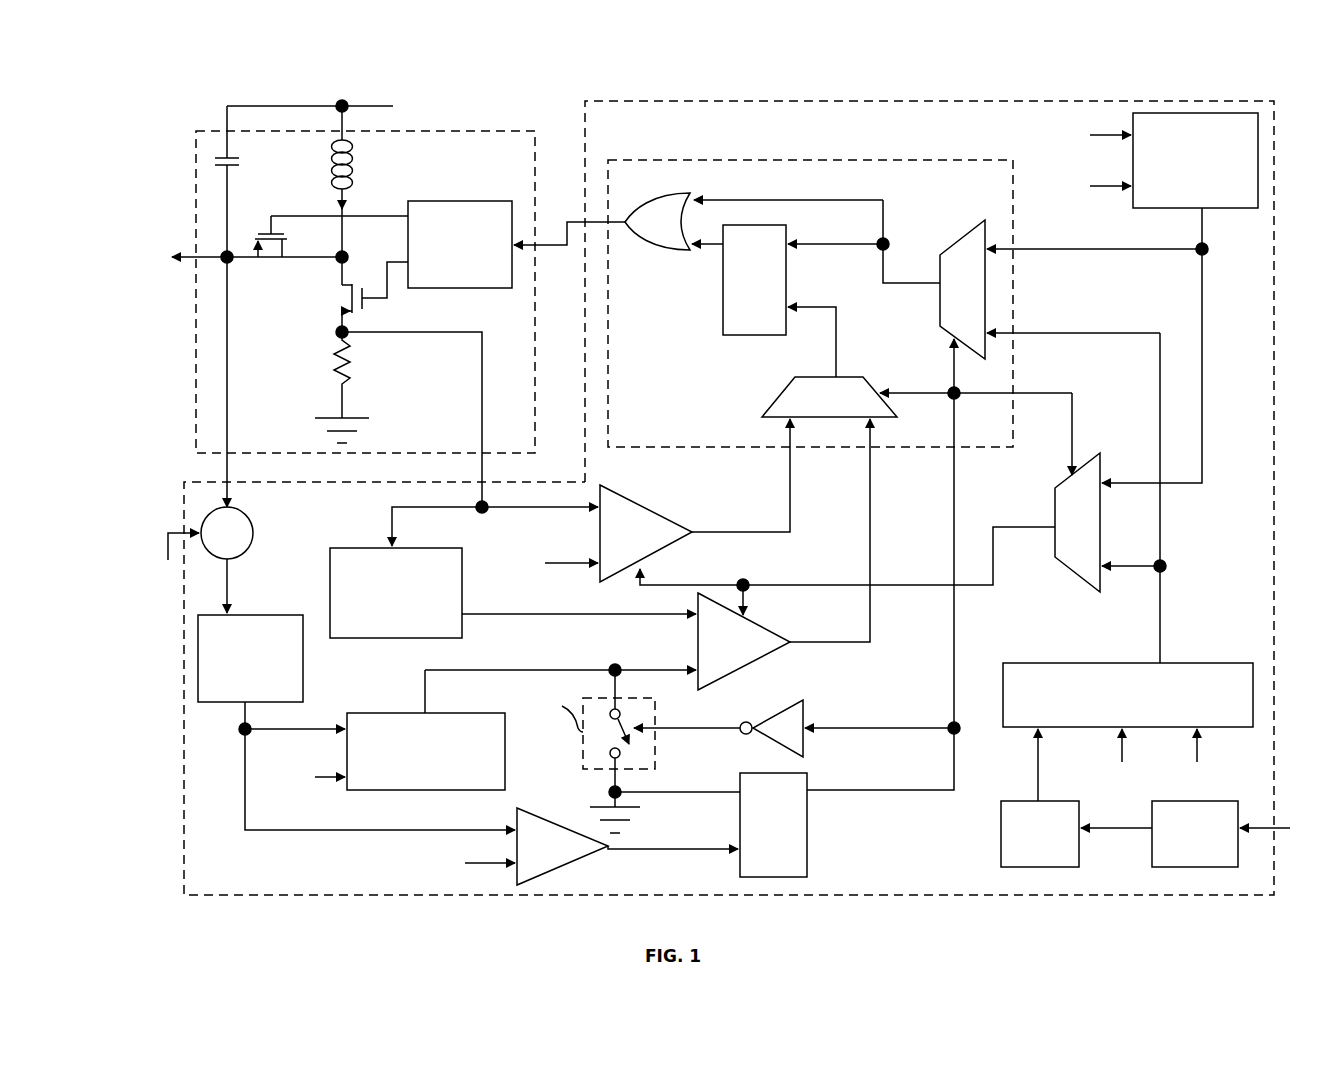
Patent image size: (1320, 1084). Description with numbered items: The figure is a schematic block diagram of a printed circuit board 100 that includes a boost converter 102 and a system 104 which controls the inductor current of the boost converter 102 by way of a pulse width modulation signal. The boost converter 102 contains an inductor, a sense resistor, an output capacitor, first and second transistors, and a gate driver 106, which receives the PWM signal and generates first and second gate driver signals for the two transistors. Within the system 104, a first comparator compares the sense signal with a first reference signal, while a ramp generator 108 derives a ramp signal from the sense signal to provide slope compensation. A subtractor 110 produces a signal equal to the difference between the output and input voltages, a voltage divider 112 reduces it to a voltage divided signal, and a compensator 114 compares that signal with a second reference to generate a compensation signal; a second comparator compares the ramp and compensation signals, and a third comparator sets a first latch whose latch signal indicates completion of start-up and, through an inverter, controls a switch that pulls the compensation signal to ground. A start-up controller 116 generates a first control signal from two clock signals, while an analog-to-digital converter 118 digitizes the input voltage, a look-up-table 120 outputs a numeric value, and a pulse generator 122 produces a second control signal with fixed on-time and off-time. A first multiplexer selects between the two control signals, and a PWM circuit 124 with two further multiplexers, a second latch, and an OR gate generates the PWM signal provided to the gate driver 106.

The printed circuit board 100 is at (151, 99).
The boost converter 102 is at (446, 131).
The system 104 is at (585, 132).
The gate driver 106 is at (460, 244).
The ramp generator 108 is at (396, 593).
The subtractor 110 is at (254, 529).
The voltage divider 112 is at (250, 658).
The compensator 114 is at (426, 751).
The start-up controller 116 is at (1195, 160).
The analog-to-digital converter 118 is at (1195, 834).
The look-up-table 120 is at (1040, 834).
The pulse generator 122 is at (1128, 695).
The PWM circuit 124 is at (811, 160).